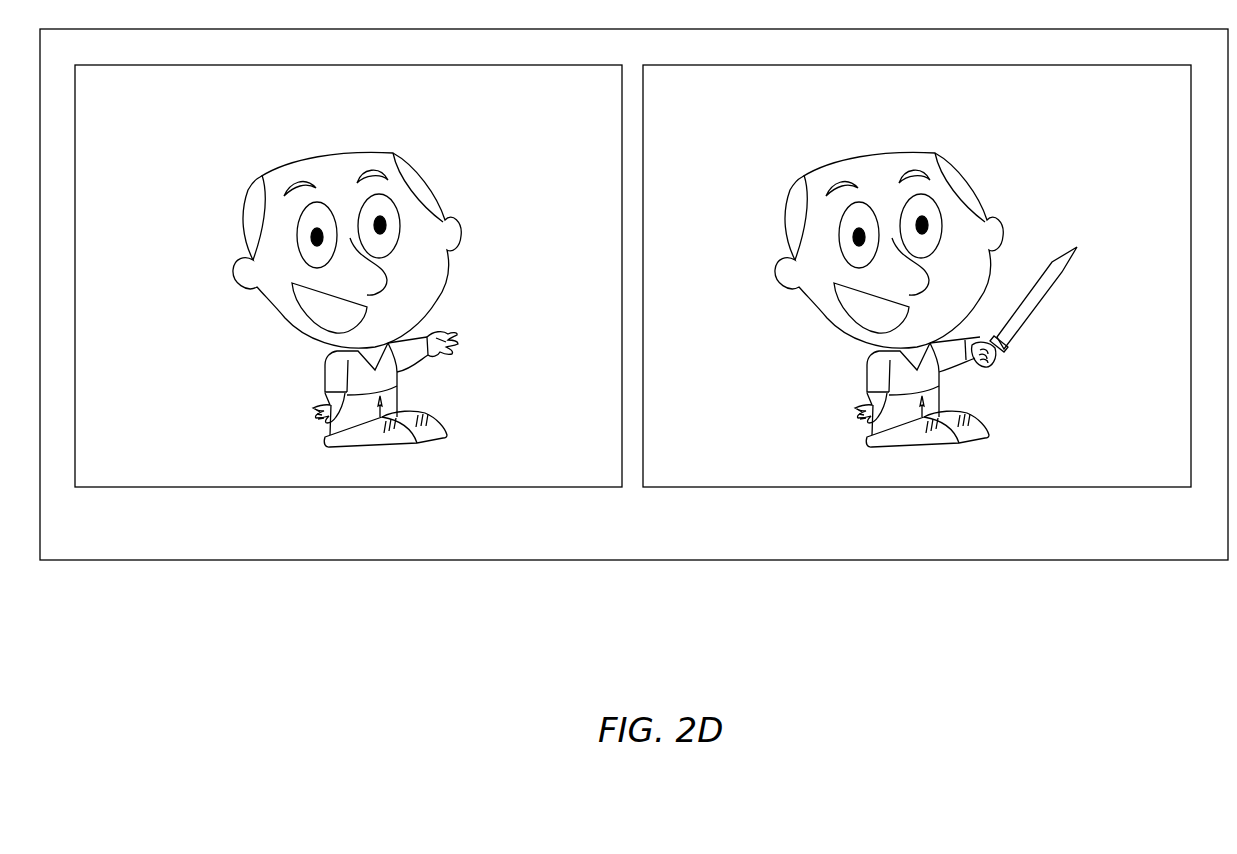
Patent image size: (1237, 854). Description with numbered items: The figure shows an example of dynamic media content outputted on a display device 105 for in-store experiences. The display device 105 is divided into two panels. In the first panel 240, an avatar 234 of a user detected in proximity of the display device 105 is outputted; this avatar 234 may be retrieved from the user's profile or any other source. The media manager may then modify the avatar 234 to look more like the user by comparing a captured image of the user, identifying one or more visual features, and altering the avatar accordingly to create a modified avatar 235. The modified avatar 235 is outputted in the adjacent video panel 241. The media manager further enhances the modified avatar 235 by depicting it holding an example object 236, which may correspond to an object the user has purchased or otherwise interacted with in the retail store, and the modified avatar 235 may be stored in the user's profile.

The display device 105 is at (655, 541).
The first panel 240 is at (152, 412).
The video panel 241 is at (721, 412).
The avatar 234 is at (316, 152).
The modified avatar 235 is at (860, 153).
The example object 236 is at (1038, 303).